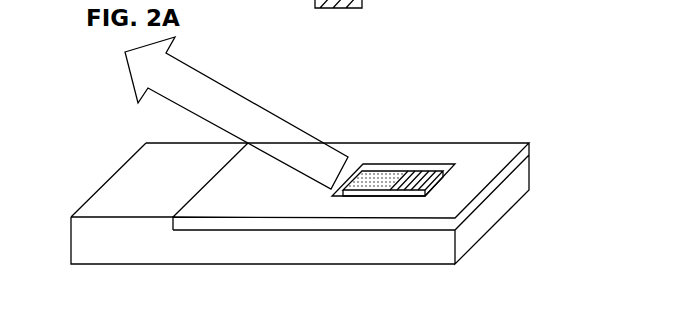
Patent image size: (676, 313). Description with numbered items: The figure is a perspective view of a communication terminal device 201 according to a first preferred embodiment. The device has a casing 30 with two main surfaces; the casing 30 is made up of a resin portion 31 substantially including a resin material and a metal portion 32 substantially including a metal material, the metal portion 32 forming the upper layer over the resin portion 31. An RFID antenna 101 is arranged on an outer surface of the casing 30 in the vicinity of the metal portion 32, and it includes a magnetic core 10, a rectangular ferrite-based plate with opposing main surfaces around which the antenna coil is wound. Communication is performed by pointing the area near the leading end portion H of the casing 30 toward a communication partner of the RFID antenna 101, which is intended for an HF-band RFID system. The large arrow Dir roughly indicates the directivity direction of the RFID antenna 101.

The magnetic core 10 is at (380, 175).
The RFID antenna 101 is at (404, 152).
The casing 30 is at (302, 207).
The resin portion 31 is at (492, 210).
The metal portion 32 is at (557, 250).
The communication terminal device 201 is at (315, 155).
The leading end portion H is at (62, 243).
The directivity direction arrow Dir is at (217, 113).